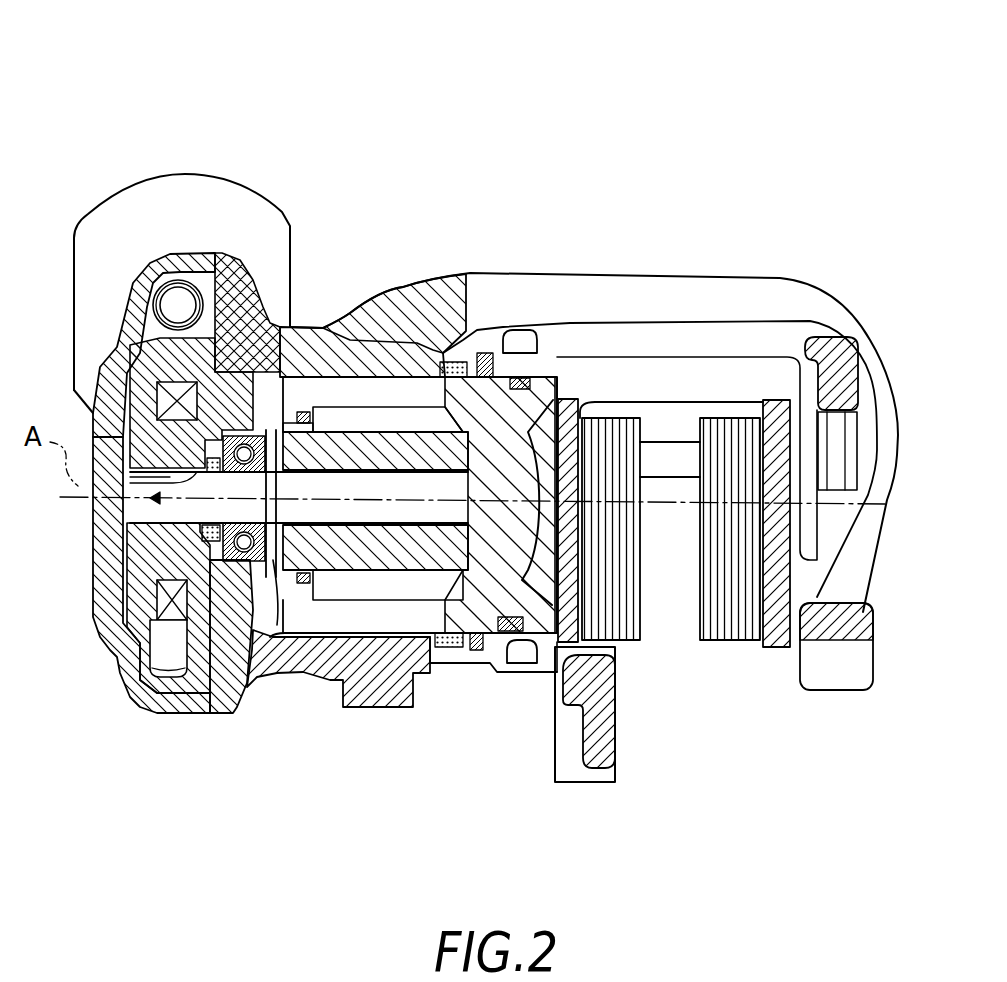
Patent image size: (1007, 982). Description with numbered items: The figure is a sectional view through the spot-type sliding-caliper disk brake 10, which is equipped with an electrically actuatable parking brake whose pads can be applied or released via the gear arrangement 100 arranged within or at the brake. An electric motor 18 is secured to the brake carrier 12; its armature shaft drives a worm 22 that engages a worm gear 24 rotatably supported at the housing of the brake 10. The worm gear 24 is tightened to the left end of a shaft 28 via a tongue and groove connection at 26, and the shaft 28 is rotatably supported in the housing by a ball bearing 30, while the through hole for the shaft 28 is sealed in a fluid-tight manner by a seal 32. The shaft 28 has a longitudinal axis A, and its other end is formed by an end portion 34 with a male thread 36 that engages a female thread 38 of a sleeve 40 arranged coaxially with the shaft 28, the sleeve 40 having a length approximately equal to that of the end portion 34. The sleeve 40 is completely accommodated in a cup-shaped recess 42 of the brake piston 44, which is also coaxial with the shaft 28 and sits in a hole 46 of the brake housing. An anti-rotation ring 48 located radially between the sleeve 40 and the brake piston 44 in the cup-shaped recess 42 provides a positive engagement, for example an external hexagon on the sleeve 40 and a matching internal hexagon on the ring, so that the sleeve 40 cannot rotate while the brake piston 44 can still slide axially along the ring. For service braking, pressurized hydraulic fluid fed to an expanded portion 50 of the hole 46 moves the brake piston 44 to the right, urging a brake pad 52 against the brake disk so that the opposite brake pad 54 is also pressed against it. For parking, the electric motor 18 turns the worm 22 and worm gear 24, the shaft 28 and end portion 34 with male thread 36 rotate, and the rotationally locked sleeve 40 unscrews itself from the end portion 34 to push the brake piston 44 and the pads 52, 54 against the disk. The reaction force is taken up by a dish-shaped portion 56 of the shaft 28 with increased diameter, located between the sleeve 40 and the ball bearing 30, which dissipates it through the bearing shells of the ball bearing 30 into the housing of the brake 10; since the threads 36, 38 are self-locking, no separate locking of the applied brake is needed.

The spot-type sliding-caliper disk brake 10 is at (555, 182).
The brake carrier 12 is at (616, 745).
The electric motor 18 is at (178, 308).
The worm 22 is at (255, 280).
The worm gear 24 is at (118, 276).
The tongue and groove connection 26 is at (150, 507).
The shaft 28 is at (242, 690).
The ball bearing 30 is at (290, 685).
The seal 32 is at (306, 300).
The end portion 34 is at (440, 478).
The male thread 36 is at (427, 680).
The female thread 38 is at (482, 680).
The sleeve 40 is at (395, 415).
The cup-shaped recess 42 is at (515, 330).
The brake piston 44 is at (513, 680).
The hole 46 is at (370, 690).
The anti-rotation ring 48 is at (372, 380).
The expanded portion 50 is at (279, 423).
The brake pad 52 is at (570, 398).
The opposite brake pad 54 is at (758, 403).
The dish-shaped portion 56 is at (278, 489).
The gear arrangement 100 is at (203, 340).